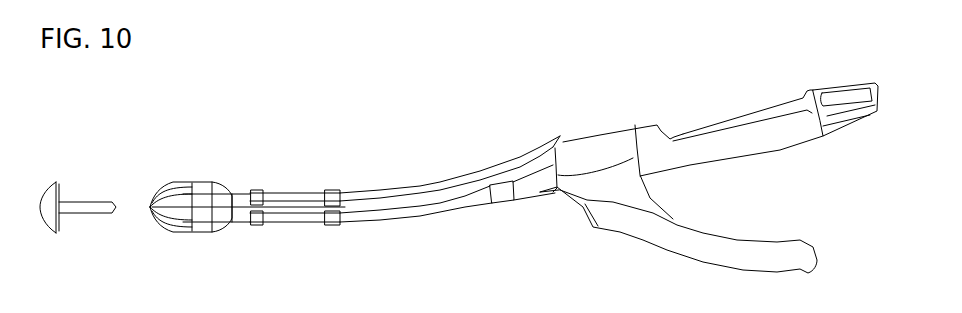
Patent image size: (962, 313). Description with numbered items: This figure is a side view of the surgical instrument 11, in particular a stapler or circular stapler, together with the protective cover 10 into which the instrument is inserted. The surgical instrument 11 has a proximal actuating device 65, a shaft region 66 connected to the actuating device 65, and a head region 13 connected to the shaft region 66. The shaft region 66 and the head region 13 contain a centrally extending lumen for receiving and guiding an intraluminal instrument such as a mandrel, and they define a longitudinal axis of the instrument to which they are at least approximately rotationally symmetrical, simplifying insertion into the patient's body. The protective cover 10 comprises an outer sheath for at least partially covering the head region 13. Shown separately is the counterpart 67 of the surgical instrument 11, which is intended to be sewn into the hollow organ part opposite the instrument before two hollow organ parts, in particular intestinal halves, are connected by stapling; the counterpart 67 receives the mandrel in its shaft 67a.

The protective cover 10 is at (182, 170).
The surgical instrument 11 is at (580, 107).
The head region 13 is at (232, 181).
The proximal actuating device 65 is at (703, 98).
The shaft region 66 is at (422, 173).
The counterpart 67 is at (60, 168).
The shaft 67a is at (76, 189).